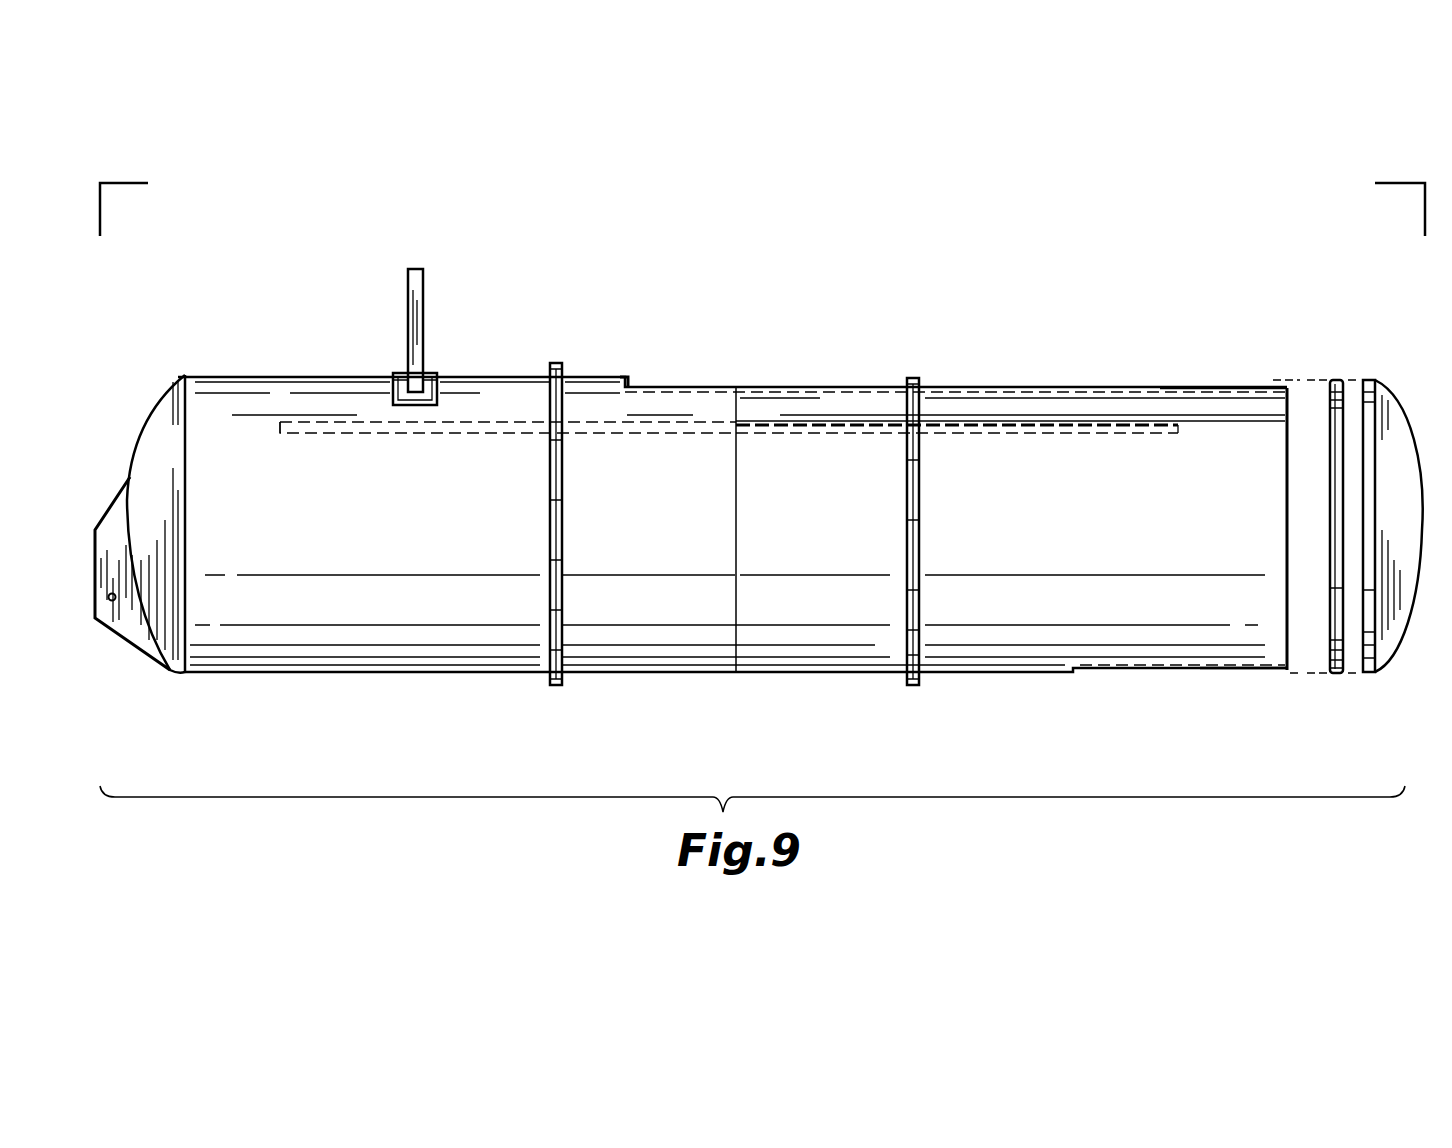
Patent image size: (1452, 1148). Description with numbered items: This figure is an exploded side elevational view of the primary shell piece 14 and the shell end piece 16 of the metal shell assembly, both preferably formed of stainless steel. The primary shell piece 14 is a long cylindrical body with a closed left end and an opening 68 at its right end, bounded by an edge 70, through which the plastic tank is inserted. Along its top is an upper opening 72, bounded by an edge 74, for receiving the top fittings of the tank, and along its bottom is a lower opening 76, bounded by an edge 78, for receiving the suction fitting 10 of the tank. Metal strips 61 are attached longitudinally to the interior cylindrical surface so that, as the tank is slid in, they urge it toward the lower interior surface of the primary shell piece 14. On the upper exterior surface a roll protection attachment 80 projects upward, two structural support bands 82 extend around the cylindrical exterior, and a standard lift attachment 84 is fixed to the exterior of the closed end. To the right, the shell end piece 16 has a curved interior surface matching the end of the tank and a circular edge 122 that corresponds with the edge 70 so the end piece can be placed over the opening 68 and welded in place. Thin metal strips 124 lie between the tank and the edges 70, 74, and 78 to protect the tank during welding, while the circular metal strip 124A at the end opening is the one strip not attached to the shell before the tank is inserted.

The suction fitting 10 is at (762, 186).
The primary shell piece 14 is at (360, 380).
The shell end piece 16 is at (1402, 413).
The metal strips 61 is at (1010, 435).
The opening 68 is at (1273, 637).
The edge 70 is at (1290, 402).
The upper opening 72 is at (1013, 390).
The edge 74 is at (795, 390).
The lower opening 76 is at (1193, 670).
The edge 78 is at (1133, 673).
The roll protection attachment 80 is at (424, 303).
The structural support bands 82 is at (549, 527).
The standard lift attachment 84 is at (120, 637).
The circular edge 122 is at (1362, 647).
The thin metal strips 124 is at (632, 383).
The circular metal strip 124A is at (1330, 528).